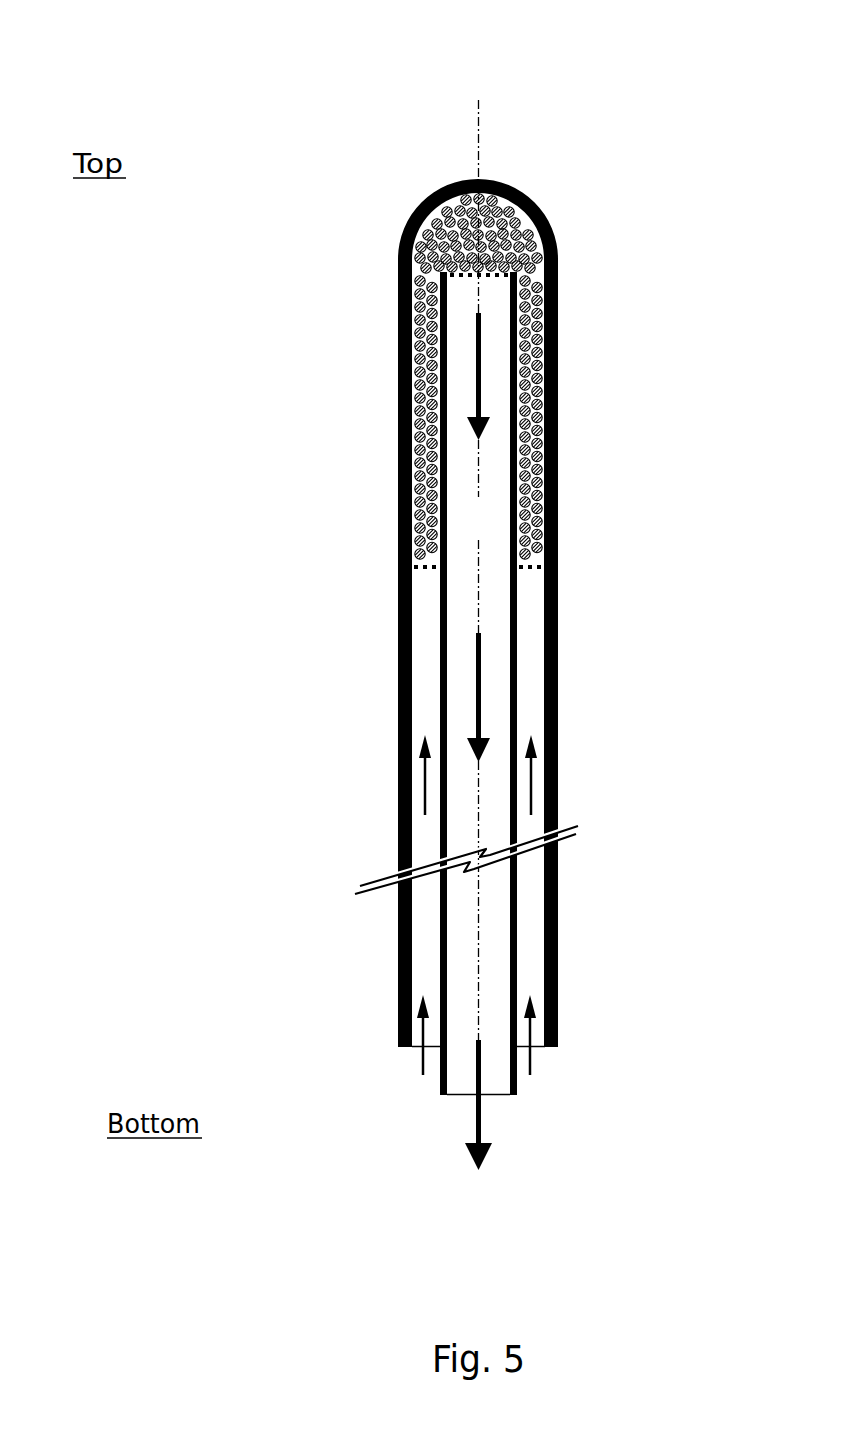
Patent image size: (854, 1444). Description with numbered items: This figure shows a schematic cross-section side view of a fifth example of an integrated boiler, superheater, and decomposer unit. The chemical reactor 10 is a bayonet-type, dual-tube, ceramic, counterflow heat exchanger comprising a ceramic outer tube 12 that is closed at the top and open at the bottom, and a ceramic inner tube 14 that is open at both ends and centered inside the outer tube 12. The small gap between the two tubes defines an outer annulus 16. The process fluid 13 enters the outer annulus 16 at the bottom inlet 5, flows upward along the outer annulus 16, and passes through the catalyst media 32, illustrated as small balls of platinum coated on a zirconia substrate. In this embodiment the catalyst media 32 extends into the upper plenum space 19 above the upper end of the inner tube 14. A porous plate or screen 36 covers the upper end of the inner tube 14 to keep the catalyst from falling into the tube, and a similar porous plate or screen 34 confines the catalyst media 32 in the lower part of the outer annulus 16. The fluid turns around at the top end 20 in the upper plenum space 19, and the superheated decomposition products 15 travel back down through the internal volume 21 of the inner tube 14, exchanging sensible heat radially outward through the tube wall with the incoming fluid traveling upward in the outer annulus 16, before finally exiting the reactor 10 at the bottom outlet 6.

The chemical reactor 10 is at (312, 50).
The outer tube 12 is at (395, 833).
The process fluid 13 is at (413, 760).
The inner tube 14 is at (520, 937).
The decomposition products 15 is at (482, 372).
The outer annulus 16 is at (428, 670).
The upper plenum space 19 is at (415, 210).
The top end 20 is at (519, 181).
The internal volume of inner tube 21 is at (493, 527).
The catalyst media 32 is at (397, 265).
The porous plate or screen 34 is at (532, 568).
The porous plate or screen 36 is at (445, 293).
The inlet 5 is at (481, 1054).
The outlet 6 is at (486, 1128).